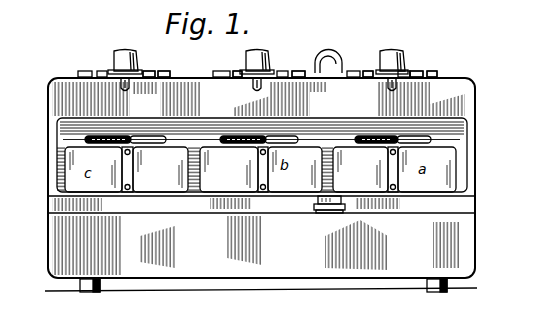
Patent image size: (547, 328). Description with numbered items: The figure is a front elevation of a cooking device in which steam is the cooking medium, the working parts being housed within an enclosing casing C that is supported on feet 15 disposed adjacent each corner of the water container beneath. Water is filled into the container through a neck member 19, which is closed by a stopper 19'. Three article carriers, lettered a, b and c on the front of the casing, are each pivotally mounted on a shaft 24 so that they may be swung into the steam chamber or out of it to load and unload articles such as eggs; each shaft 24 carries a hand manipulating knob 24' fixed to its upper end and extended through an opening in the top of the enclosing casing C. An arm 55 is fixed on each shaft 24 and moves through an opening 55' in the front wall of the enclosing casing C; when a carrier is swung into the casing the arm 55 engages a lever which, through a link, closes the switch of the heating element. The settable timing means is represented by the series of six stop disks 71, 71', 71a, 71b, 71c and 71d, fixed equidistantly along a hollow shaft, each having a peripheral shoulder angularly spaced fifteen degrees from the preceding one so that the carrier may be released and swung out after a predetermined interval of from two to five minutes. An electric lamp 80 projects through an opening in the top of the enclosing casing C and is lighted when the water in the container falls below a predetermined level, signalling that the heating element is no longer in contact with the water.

The enclosing casing C is at (475, 98).
The feet 15 is at (100, 288).
The neck member 19 is at (320, 230).
The stopper 19' is at (305, 205).
The shaft 24 is at (258, 95).
The hand manipulating knob 24' is at (254, 44).
The arm 55 is at (209, 161).
The openings 55' is at (280, 158).
The stop disk 71 is at (252, 59).
The stop disk 71' is at (269, 60).
The stop disk 71a is at (383, 80).
The stop disk 71b is at (403, 77).
The stop disk 71c is at (284, 71).
The stop disk 71d is at (167, 72).
The electric lamp 80 is at (323, 50).